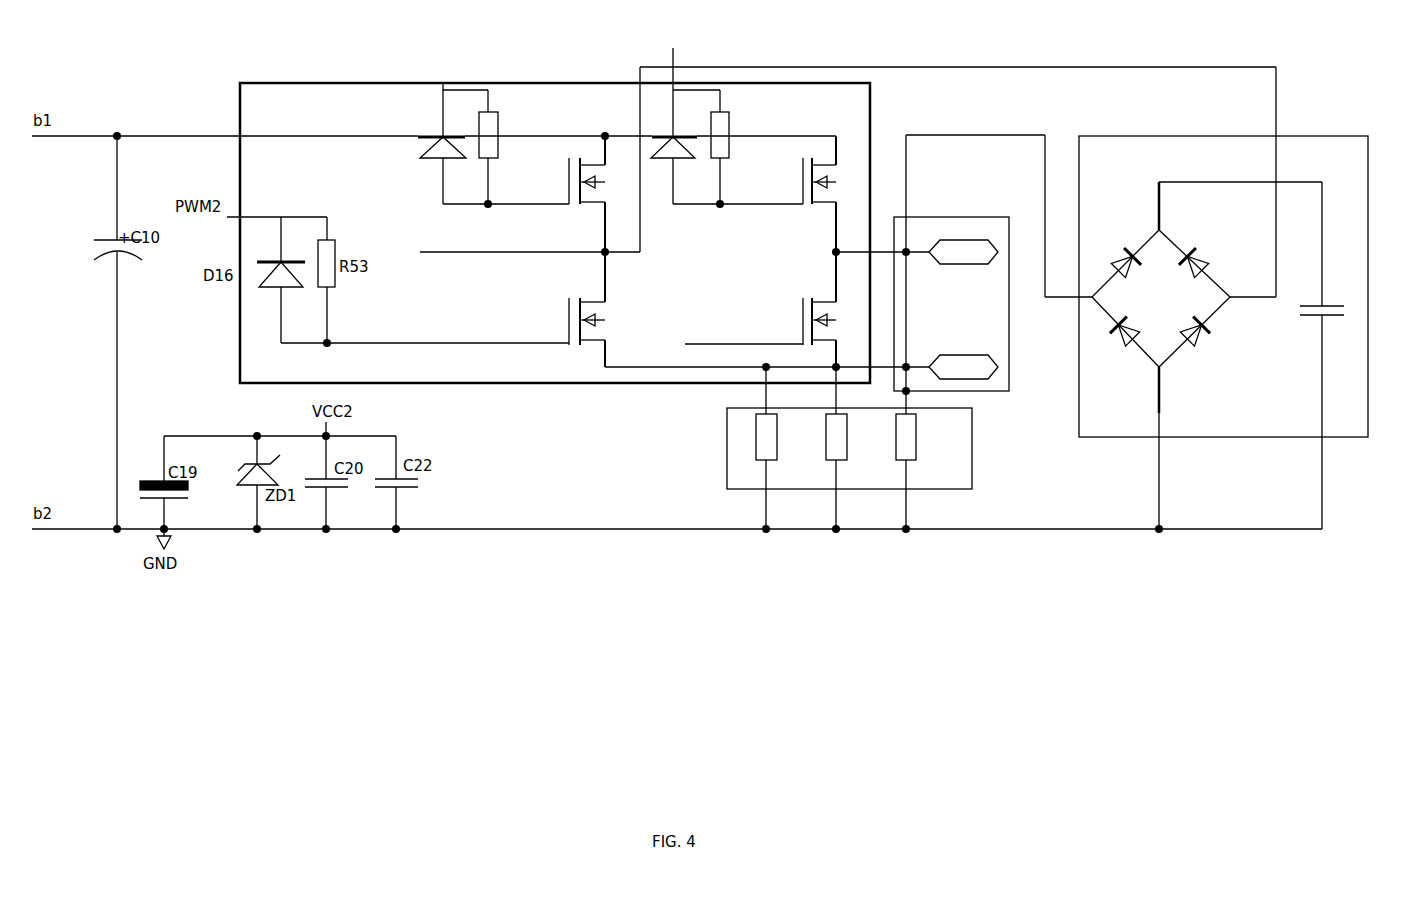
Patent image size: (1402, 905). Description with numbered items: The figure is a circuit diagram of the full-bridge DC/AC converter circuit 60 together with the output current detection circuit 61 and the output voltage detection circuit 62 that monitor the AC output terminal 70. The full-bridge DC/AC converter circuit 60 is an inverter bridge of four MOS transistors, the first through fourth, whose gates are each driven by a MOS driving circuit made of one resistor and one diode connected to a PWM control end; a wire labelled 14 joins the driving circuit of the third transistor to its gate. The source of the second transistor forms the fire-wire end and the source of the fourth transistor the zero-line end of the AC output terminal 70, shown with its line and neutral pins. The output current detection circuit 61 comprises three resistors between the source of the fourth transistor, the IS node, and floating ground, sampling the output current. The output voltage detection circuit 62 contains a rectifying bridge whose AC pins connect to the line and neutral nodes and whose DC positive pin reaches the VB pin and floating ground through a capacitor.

The control node wire 14 is at (413, 352).
The full-bridge DC/AC converter circuit 60 is at (613, 112).
The output current detection circuit 61 is at (932, 473).
The output voltage detection circuit 62 is at (1202, 152).
The AC output terminal 70 is at (945, 230).